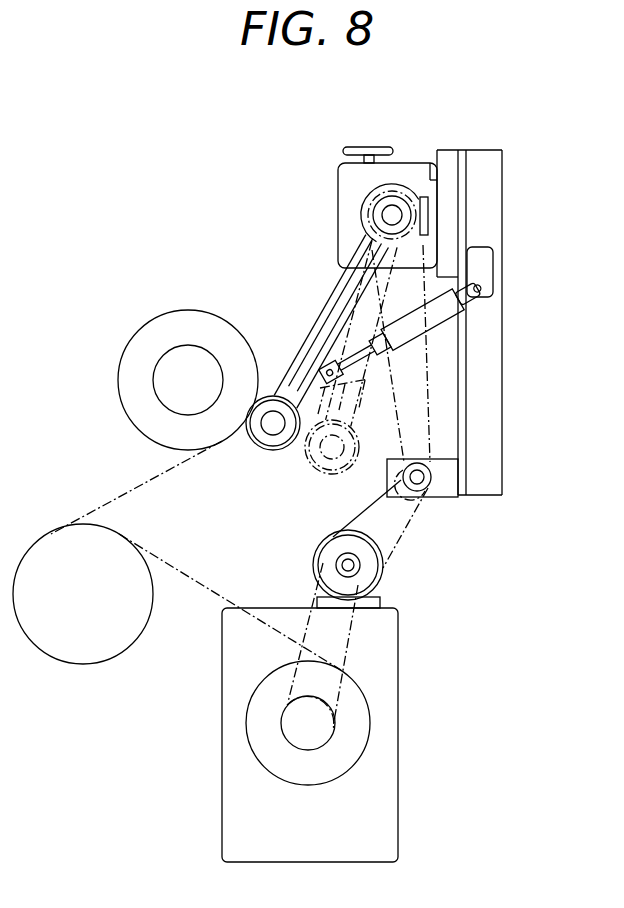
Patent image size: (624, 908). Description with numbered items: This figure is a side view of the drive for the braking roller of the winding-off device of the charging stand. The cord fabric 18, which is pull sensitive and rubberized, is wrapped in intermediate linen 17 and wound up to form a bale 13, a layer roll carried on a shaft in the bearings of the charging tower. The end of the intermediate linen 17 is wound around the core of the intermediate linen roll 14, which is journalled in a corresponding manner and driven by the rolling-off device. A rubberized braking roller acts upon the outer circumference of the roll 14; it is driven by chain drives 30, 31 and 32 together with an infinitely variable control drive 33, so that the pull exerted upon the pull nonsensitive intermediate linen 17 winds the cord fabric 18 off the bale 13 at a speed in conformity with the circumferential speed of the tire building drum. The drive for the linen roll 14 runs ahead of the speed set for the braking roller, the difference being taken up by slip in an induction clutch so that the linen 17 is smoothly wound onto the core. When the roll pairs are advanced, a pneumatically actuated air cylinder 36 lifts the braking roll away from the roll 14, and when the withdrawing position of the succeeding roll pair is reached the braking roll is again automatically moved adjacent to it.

The bale 13 is at (93, 648).
The intermediate linen roll 14 is at (155, 338).
The intermediate linen 17 is at (125, 493).
The cord fabric 18 is at (208, 588).
The chain drive 30 is at (410, 530).
The chain drive 31 is at (325, 295).
The chain drive 32 is at (430, 397).
The infinitely variable control drive 33 is at (350, 185).
The air cylinder 36 is at (443, 305).